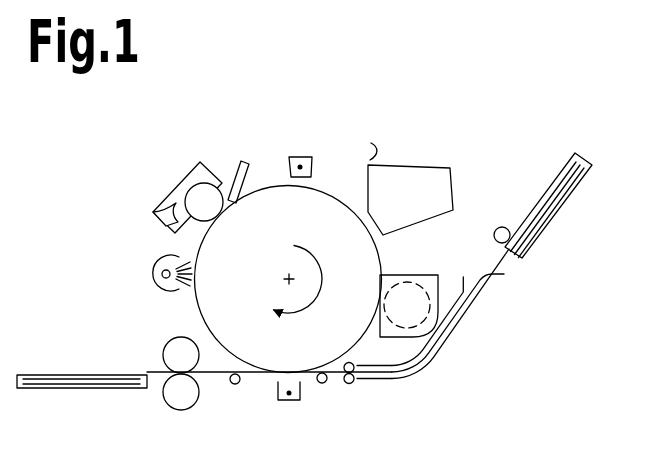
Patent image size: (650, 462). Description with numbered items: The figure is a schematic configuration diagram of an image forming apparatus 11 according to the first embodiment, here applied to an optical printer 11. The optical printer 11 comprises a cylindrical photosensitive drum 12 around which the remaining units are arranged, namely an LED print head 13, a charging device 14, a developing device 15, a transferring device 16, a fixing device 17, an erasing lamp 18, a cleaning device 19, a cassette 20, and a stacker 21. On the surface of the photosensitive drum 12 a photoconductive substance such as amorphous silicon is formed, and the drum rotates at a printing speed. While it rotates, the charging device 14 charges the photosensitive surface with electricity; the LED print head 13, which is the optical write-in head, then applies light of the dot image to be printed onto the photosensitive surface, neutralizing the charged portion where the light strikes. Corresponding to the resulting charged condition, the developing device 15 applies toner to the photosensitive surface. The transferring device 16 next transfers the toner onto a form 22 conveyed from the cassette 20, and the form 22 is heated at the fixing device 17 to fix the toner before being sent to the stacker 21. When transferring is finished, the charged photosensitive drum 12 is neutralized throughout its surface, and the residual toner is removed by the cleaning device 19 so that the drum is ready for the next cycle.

The image forming apparatus 11 is at (248, 132).
The photosensitive drum 12 is at (337, 208).
The LED print head 13 is at (440, 165).
The charging device 14 is at (295, 157).
The developing device 15 is at (417, 275).
The transferring device 16 is at (290, 405).
The fixing device 17 is at (163, 403).
The erasing lamp 18 is at (148, 273).
The cleaning device 19 is at (173, 187).
The cassette 20 is at (560, 205).
The stacker 21 is at (98, 390).
The form 22 is at (497, 261).